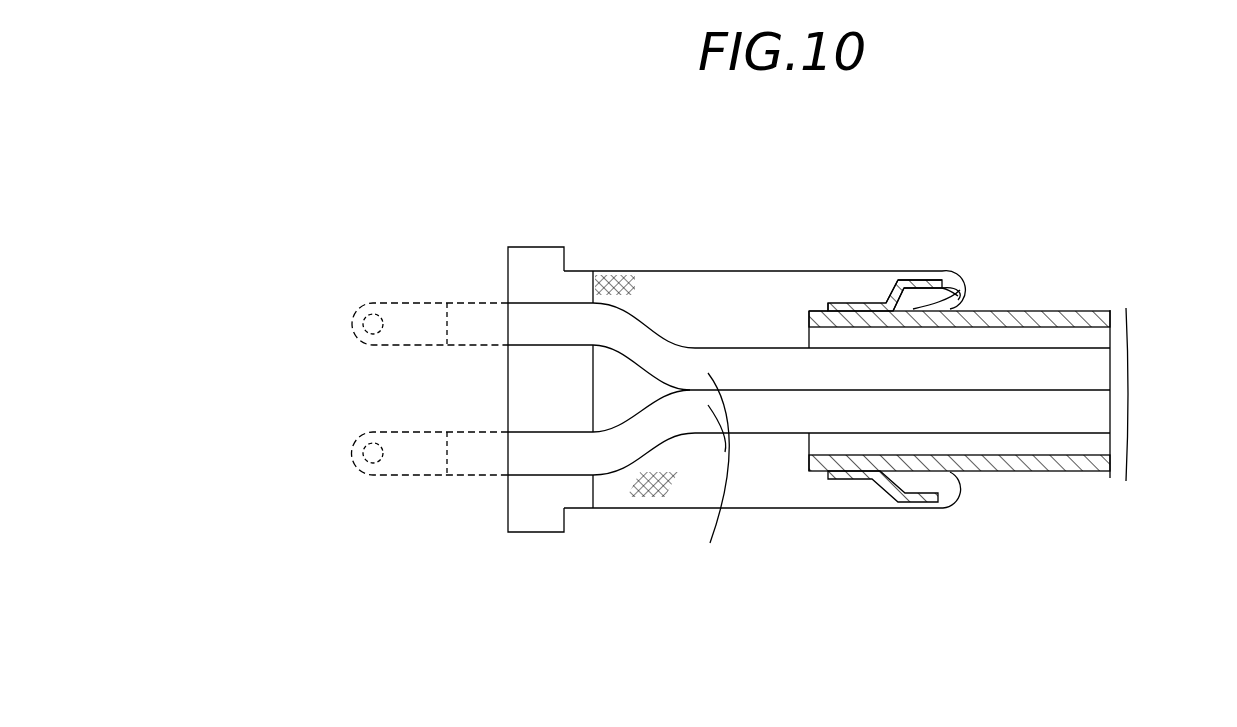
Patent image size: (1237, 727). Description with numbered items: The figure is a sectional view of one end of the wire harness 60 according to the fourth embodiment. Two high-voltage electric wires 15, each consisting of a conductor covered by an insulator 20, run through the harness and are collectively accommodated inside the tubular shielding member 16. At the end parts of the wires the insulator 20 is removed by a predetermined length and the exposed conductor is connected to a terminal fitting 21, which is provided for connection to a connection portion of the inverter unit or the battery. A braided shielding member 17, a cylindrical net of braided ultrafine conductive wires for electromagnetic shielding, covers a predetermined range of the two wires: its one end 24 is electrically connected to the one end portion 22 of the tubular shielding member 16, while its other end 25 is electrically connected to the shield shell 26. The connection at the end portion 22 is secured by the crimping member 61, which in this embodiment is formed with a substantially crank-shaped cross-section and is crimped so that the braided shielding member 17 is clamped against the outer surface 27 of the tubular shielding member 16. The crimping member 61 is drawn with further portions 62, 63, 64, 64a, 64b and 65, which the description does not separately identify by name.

The wire harness 60 is at (309, 188).
The shield shell 26 is at (523, 246).
The braided shielding member 17 is at (668, 272).
The other end 25 is at (603, 271).
The terminal fitting 21 is at (355, 447).
The high-voltage electric wire 15 is at (1100, 370).
The insulator 20 is at (718, 475).
The outer surface 27 is at (1037, 311).
The tubular shielding member 16 is at (1089, 311).
The crimping member 61 is at (932, 316).
The base plate portion 62 is at (860, 303).
The inclined connecting portion 65 is at (908, 281).
The contact piece 64 is at (963, 244).
The contact piece base 64a is at (935, 280).
The contact piece tip 64b is at (960, 290).
The elastic contact portion 63 is at (982, 276).
The one end 24 is at (832, 303).
The one end portion 22 is at (823, 309).